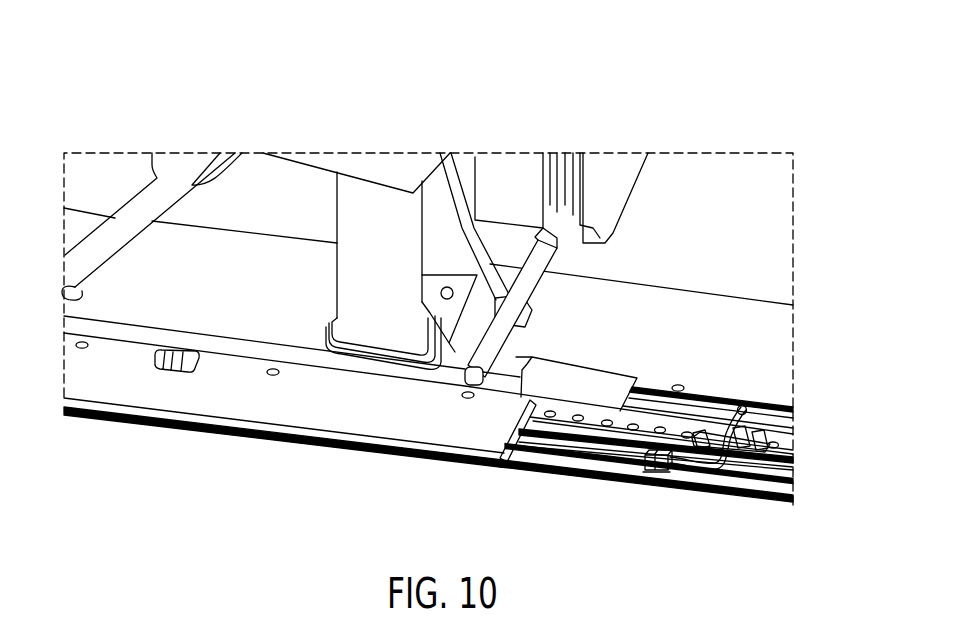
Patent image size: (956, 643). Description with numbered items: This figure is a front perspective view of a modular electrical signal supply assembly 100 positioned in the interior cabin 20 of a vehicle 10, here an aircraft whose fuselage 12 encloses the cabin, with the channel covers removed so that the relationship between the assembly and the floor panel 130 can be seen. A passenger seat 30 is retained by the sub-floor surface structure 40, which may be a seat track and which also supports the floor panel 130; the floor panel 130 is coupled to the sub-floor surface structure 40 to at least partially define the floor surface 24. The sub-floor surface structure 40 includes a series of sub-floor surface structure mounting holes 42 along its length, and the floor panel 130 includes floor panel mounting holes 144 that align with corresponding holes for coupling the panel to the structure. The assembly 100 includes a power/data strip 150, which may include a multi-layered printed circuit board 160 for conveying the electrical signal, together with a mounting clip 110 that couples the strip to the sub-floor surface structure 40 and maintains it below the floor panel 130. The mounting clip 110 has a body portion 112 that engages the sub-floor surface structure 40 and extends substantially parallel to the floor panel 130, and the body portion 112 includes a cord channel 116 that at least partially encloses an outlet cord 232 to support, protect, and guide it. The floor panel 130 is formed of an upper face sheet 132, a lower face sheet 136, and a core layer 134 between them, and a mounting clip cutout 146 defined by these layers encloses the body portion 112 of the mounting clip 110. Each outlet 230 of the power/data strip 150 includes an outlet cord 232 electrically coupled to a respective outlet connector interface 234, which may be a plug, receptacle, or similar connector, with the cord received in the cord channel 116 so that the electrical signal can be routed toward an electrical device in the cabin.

The vehicle 10 is at (360, 84).
The fuselage 12 is at (367, 110).
The interior cabin 20 is at (376, 138).
The passenger seat 30 is at (612, 223).
The floor surface 24 is at (773, 343).
The sub-floor surface structure 40 is at (788, 430).
The sub-floor surface structure mounting hole 42 is at (660, 427).
The modular electrical signal supply assembly 100 is at (698, 381).
The mounting clip 110 is at (181, 350).
The body portion 112 is at (195, 356).
The cord channel 116 is at (722, 431).
The floor panel 130 is at (296, 452).
The upper face sheet 132 is at (342, 418).
The core layer 134 is at (362, 440).
The lower face sheet 136 is at (399, 453).
The floor panel mounting hole 144 is at (275, 367).
The mounting clip cutout 146 is at (176, 349).
The power/data strip 150 is at (570, 465).
The printed circuit board 160 is at (595, 468).
The outlet 230 is at (651, 476).
The outlet cord 232 is at (172, 372).
The outlet connector interface 234 is at (656, 472).